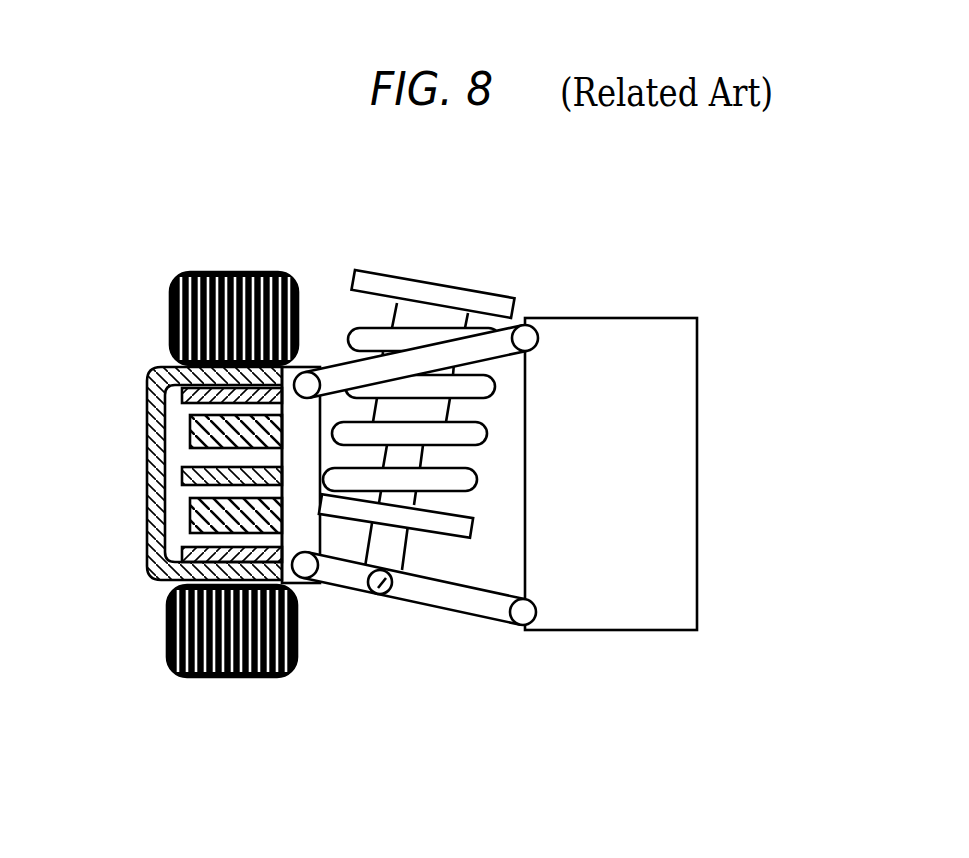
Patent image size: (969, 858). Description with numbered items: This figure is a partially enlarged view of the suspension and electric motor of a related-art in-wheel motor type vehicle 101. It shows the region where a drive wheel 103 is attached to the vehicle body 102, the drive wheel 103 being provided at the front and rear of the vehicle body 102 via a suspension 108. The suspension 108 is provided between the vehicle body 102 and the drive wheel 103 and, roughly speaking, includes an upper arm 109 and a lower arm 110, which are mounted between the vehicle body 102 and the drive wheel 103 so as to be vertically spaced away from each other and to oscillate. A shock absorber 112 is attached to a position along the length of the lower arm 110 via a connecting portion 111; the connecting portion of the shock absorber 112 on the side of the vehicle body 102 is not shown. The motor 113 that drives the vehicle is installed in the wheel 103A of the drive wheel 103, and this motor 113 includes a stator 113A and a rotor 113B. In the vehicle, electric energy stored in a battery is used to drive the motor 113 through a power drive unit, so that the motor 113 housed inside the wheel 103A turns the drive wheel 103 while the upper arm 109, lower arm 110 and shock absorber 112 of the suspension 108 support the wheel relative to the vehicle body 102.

The in-wheel motor type vehicle 101 is at (706, 250).
The vehicle body 102 is at (697, 483).
The drive wheel 103 is at (184, 446).
The wheel 103A is at (150, 488).
The suspension 108 is at (490, 283).
The upper arm 109 is at (342, 375).
The lower arm 110 is at (455, 596).
The connecting portion 111 is at (374, 594).
The shock absorber 112 is at (422, 310).
The motor 113 is at (187, 430).
The stator 113A is at (180, 386).
The rotor 113B is at (190, 512).